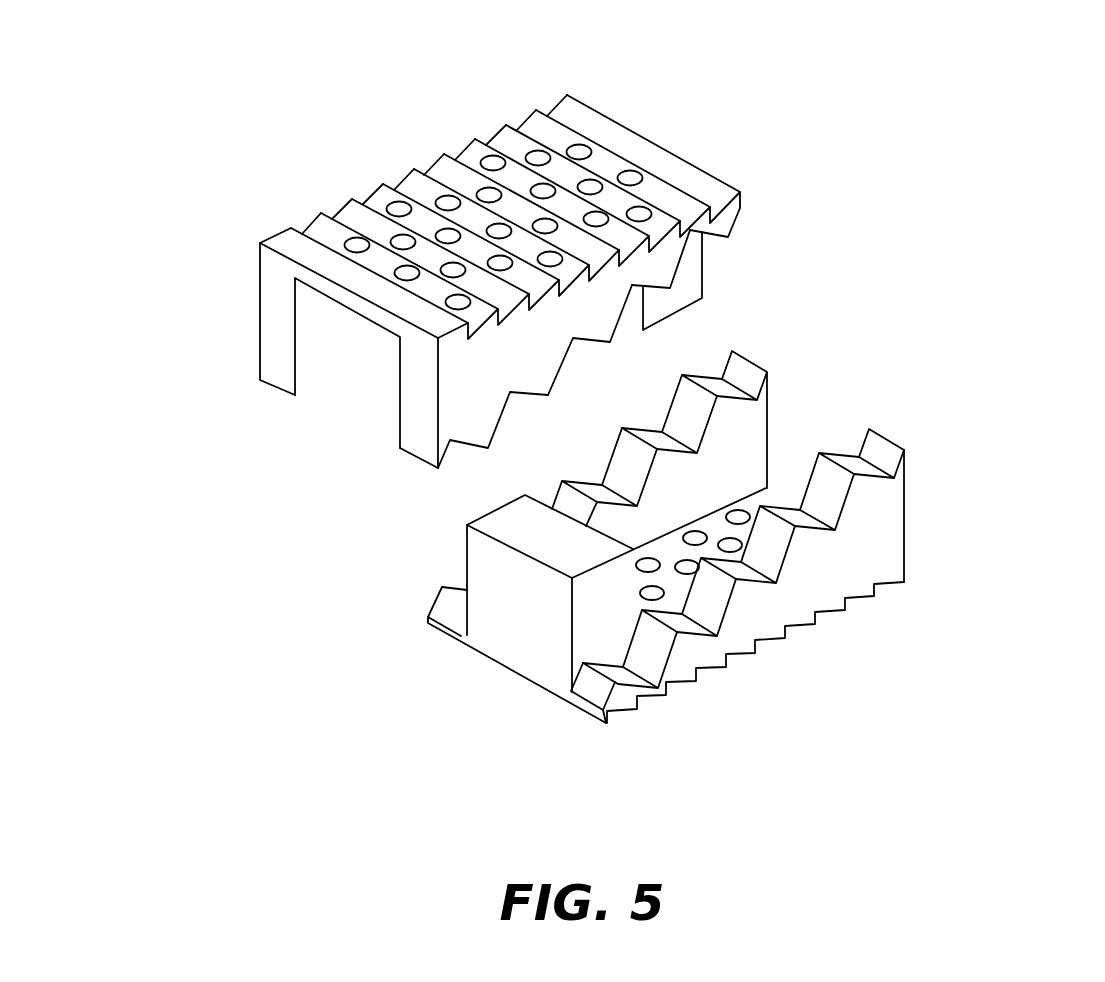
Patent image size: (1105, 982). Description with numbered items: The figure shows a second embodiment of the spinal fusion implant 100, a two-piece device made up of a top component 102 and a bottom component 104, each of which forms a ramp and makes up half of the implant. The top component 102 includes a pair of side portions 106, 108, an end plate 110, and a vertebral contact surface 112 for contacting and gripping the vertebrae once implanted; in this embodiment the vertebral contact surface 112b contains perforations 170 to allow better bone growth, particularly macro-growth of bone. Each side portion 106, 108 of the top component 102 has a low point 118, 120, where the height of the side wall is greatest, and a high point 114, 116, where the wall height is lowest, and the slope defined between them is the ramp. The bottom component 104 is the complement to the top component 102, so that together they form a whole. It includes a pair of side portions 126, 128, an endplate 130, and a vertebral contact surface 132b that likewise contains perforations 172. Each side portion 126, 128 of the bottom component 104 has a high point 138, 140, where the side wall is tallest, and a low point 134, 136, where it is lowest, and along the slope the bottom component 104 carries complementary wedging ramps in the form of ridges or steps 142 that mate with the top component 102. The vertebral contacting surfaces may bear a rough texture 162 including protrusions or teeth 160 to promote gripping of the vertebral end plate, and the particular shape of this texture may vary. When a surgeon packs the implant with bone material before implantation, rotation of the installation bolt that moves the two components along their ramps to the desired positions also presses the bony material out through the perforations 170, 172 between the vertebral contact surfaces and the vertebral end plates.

The spinal fusion implant 100 is at (950, 194).
The top component 102 is at (256, 226).
The bottom component 104 is at (894, 608).
The side portion 106 is at (449, 402).
The side portion 108 is at (301, 351).
The end plate 110 is at (676, 299).
The vertebral contact surface 112 is at (588, 347).
The vertebral contact surface 112b is at (660, 163).
The high point 114 is at (740, 192).
The high point 116 is at (567, 95).
The low point 118 is at (418, 464).
The low point 120 is at (266, 395).
The side portion 126 is at (826, 575).
The side portion 128 is at (700, 481).
The endplate 130 is at (493, 613).
The vertebral contact surface 132b is at (676, 584).
The low point 134 is at (593, 712).
The low point 136 is at (427, 628).
The high point 138 is at (897, 440).
The high point 140 is at (752, 366).
The ridges or steps 142 is at (590, 478).
The protrusions or teeth 160 is at (782, 640).
The texture 162 is at (383, 185).
The perforations 170 is at (445, 199).
The perforations 172 is at (737, 516).